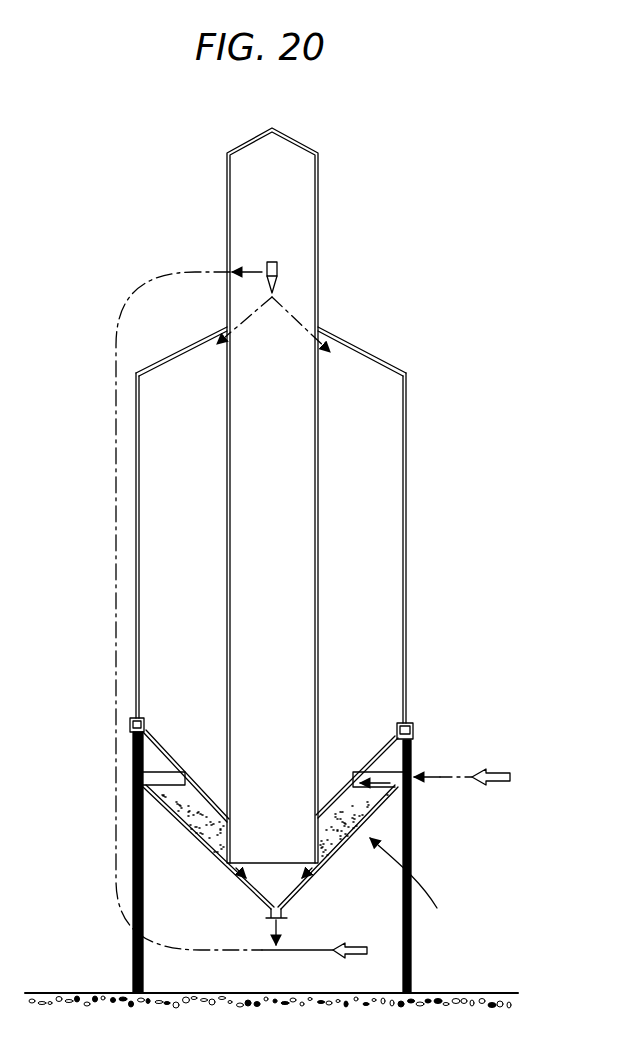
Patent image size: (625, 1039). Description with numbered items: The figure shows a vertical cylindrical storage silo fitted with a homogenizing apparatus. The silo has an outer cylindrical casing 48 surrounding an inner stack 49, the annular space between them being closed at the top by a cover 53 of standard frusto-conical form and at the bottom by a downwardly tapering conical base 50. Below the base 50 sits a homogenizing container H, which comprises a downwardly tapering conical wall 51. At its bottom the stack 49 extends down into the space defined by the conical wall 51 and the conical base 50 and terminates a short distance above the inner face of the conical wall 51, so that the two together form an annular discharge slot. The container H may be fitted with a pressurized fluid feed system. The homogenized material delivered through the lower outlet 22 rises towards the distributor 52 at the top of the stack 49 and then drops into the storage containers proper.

The lower outlet 22 is at (267, 914).
The outer cylindrical casing 48 is at (405, 546).
The inner stack 49 is at (318, 541).
The conical base 50 is at (372, 760).
The conical wall 51 is at (316, 872).
The distributor 52 is at (280, 274).
The cover 53 is at (373, 356).
The homogenizing container H is at (415, 882).